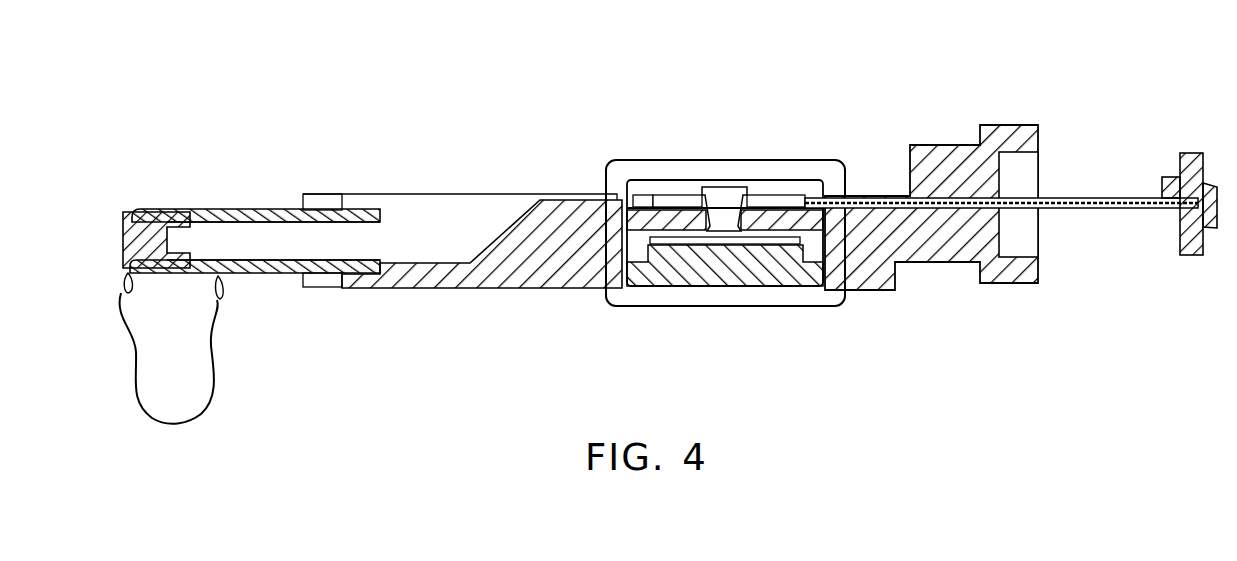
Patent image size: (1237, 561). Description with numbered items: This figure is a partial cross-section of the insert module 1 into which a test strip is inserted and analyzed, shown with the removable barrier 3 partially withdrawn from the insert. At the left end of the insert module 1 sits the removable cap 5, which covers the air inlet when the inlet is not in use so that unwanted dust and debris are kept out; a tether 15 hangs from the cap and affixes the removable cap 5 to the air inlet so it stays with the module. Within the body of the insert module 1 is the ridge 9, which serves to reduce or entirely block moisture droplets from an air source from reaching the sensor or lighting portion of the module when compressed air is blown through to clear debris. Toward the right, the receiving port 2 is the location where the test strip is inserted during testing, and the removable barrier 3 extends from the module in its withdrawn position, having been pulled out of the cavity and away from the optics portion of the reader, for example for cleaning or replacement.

The insert module 1 is at (1220, 83).
The receiving port 2 is at (767, 241).
The removable barrier 3 is at (1073, 199).
The removable cap 5 is at (126, 231).
The ridge 9 is at (507, 231).
The tether 15 is at (218, 378).